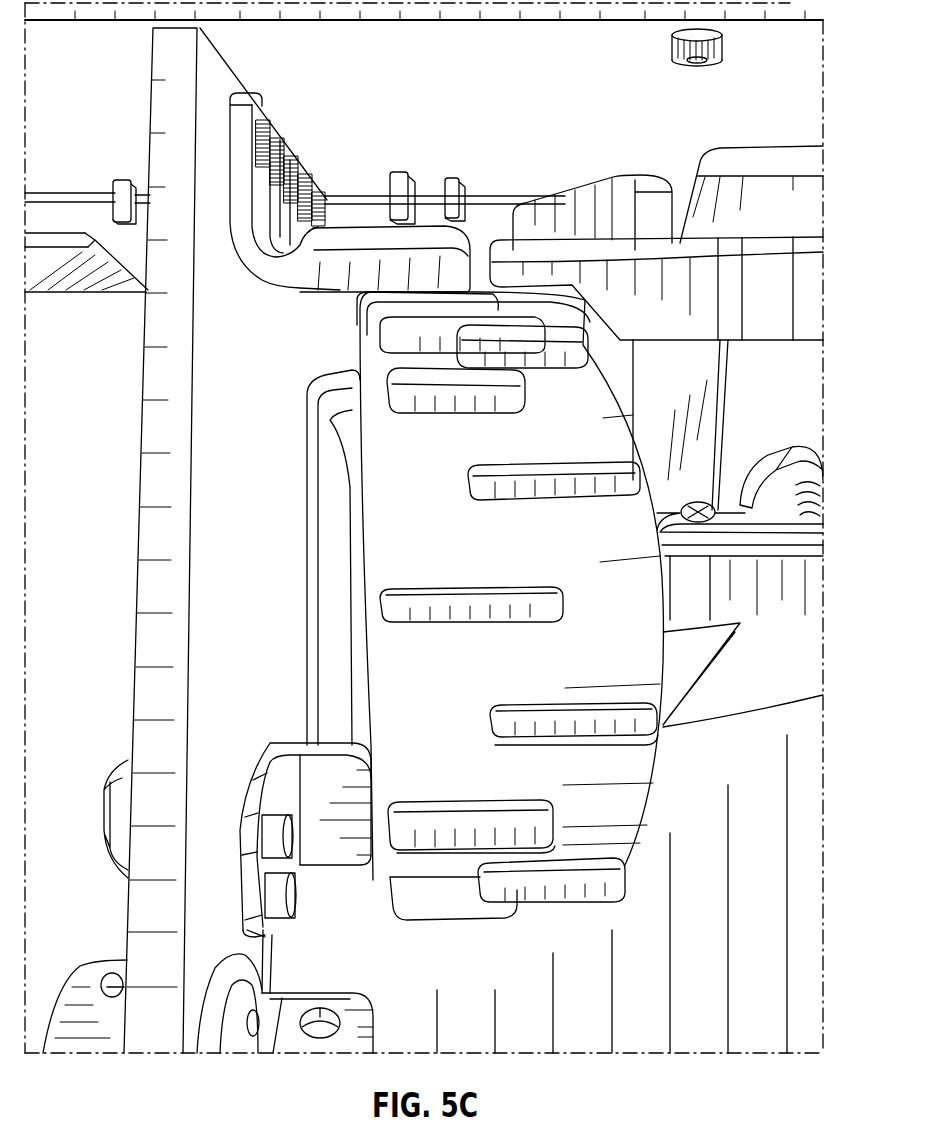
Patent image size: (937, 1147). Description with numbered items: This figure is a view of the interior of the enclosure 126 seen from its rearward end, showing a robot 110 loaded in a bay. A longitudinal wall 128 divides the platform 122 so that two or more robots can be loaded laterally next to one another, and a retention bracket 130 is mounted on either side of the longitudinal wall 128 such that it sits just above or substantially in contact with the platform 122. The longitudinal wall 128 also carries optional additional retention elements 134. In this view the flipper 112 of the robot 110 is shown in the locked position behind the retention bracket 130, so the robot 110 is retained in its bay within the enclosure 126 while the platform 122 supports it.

The robot 110 is at (805, 638).
The flipper 112 is at (313, 545).
The platform 122 is at (600, 949).
The enclosure 126 is at (578, 55).
The longitudinal wall 128 is at (168, 93).
The retention bracket 130 is at (308, 850).
The additional retention elements 134 is at (343, 235).